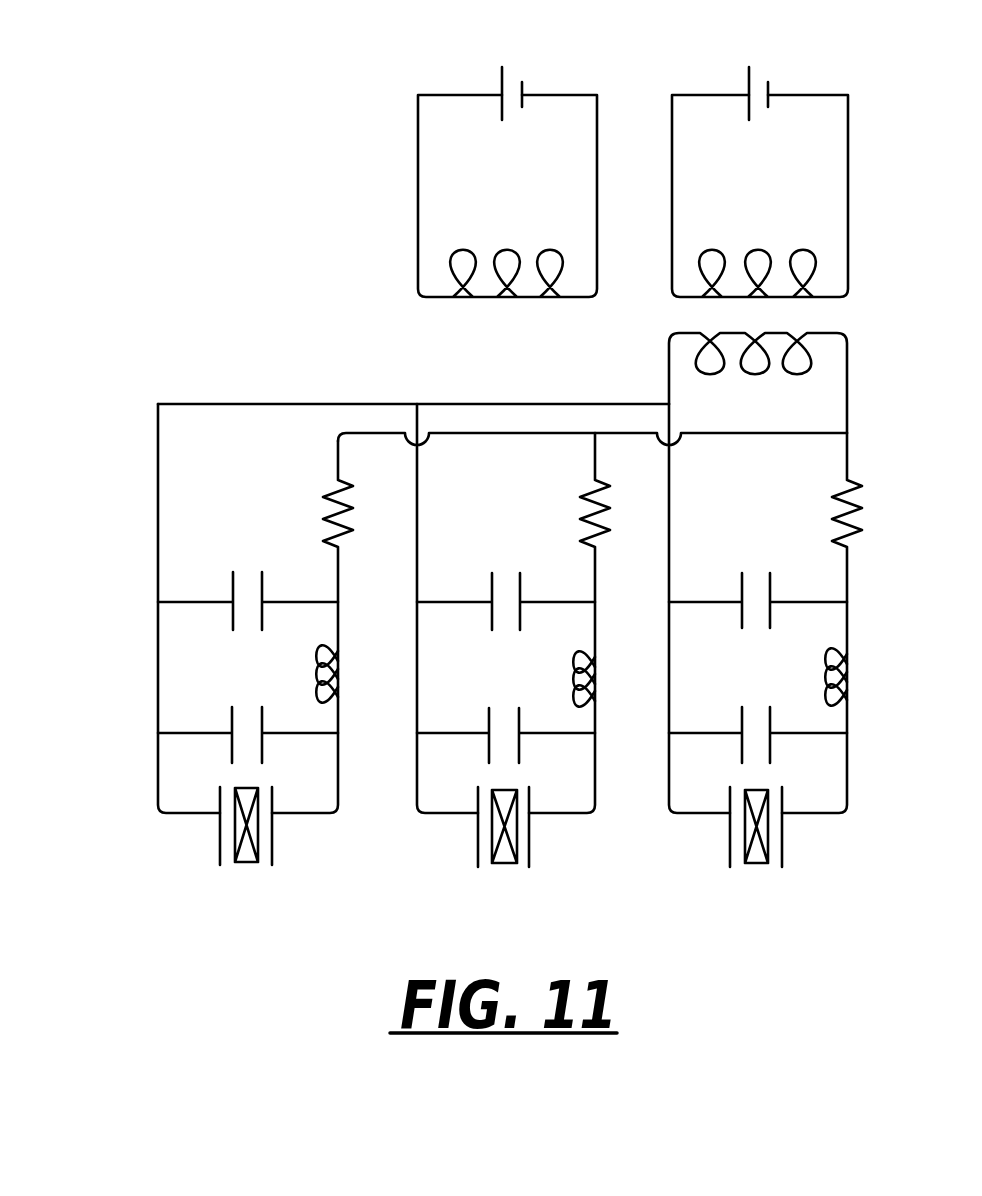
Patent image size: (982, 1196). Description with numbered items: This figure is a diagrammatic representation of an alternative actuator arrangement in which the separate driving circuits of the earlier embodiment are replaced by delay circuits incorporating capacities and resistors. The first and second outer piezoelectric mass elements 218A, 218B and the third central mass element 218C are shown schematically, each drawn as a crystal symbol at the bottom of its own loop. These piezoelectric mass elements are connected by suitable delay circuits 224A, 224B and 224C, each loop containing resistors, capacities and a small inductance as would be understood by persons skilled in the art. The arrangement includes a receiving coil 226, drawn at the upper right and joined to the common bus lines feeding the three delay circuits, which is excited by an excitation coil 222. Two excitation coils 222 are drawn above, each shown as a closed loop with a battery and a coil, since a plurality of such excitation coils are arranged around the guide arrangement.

The excitation coil 222 is at (560, 93).
The receiving coil 226 is at (835, 332).
The delay circuit 224A is at (850, 580).
The delay circuit 224B is at (157, 527).
The delay circuit 224C is at (412, 708).
The first outer piezoelectric mass element 218A is at (757, 865).
The second outer piezoelectric mass element 218B is at (247, 865).
The third central mass element 218C is at (502, 865).